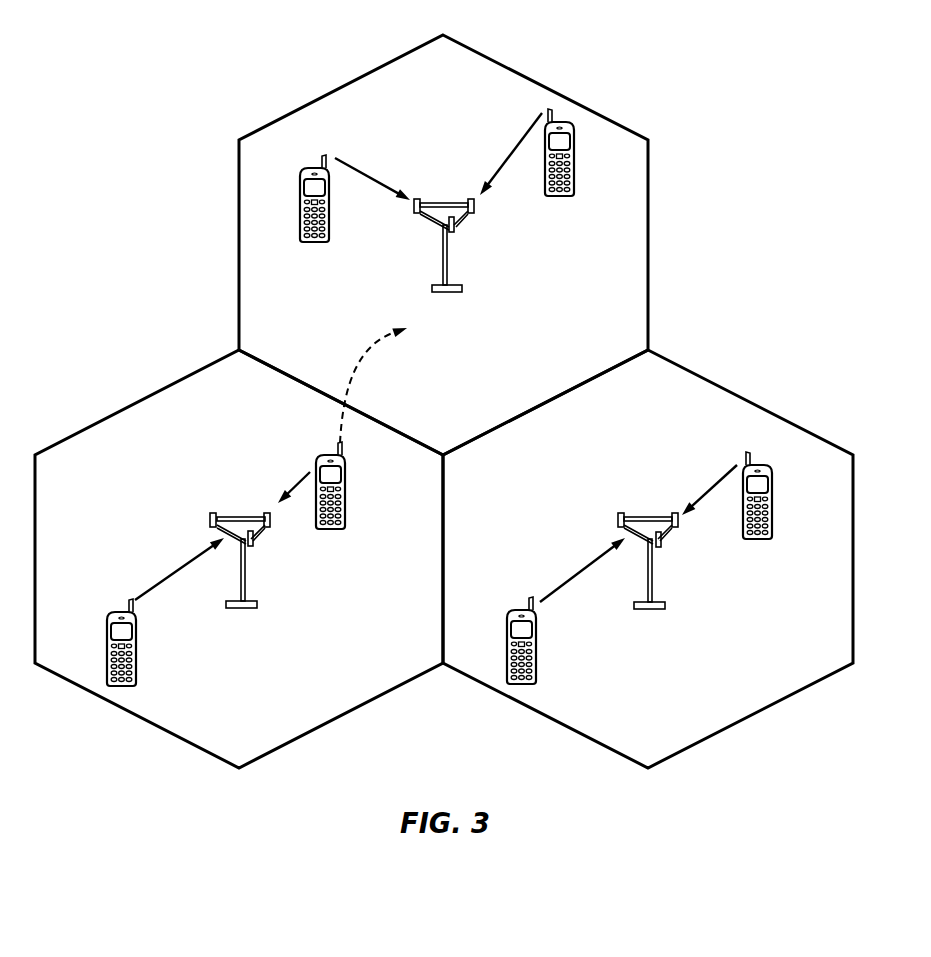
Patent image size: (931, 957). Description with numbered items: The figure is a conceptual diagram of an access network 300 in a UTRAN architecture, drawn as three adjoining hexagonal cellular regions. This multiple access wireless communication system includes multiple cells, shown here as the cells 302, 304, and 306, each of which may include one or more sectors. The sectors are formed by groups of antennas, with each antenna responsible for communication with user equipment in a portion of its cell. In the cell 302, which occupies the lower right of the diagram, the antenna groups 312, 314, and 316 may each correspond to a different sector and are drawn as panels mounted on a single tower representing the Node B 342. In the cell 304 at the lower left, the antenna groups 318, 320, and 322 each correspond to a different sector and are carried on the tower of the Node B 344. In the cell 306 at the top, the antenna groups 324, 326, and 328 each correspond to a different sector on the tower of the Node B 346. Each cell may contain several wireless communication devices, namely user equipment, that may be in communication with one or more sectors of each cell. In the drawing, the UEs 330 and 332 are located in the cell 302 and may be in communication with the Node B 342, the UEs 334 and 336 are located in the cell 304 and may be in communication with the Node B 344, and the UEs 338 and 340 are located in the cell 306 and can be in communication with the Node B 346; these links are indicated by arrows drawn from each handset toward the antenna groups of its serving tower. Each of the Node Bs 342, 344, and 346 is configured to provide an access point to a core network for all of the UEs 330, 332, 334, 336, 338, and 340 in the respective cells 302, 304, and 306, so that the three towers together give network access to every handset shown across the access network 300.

The access network 300 is at (765, 62).
The cell 302 is at (750, 403).
The cell 304 is at (113, 412).
The cell 306 is at (527, 77).
The antenna group 312 is at (618, 516).
The antenna group 314 is at (661, 546).
The antenna group 316 is at (678, 526).
The antenna group 318 is at (253, 546).
The antenna group 320 is at (270, 526).
The antenna group 322 is at (210, 516).
The antenna group 324 is at (414, 212).
The antenna group 326 is at (455, 232).
The antenna group 328 is at (474, 212).
The UE 330 is at (773, 490).
The UE 332 is at (507, 632).
The UE 334 is at (346, 478).
The UE 336 is at (107, 632).
The UE 338 is at (314, 243).
The UE 340 is at (560, 196).
The Node B 342 is at (646, 541).
The Node B 344 is at (239, 540).
The Node B 346 is at (442, 225).